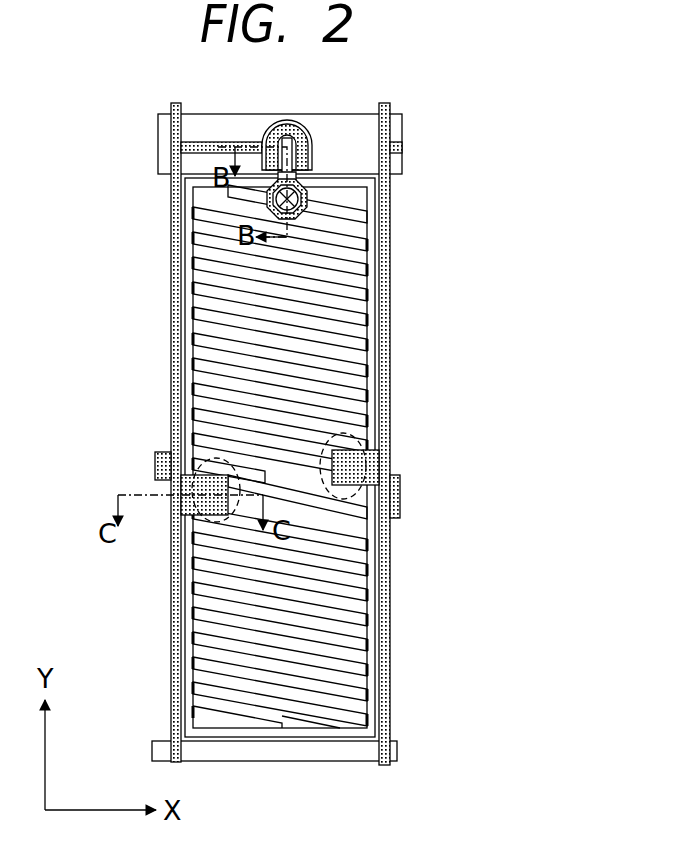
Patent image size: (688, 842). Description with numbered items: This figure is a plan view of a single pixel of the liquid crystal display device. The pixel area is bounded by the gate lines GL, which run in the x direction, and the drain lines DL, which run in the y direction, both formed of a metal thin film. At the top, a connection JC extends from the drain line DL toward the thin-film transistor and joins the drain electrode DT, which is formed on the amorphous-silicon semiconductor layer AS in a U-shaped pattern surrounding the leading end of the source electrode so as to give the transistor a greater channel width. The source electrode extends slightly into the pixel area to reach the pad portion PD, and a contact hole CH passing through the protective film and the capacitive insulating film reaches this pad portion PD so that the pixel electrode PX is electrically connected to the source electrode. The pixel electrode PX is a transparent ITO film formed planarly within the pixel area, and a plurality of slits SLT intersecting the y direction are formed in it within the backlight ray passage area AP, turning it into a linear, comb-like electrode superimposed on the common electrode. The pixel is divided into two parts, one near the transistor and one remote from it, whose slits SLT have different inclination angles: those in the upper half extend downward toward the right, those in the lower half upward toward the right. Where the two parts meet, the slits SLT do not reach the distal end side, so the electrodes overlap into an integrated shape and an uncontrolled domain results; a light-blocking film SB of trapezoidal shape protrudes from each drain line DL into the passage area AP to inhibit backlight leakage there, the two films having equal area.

The gate line GL is at (158, 137).
The drain line DL is at (171, 383).
The connection JC is at (202, 142).
The semiconductor layer AS is at (285, 121).
The drain electrode DT is at (306, 124).
The pad portion PD is at (307, 196).
The contact hole CH is at (300, 211).
The slit SLT is at (193, 260).
The pixel electrode PX is at (193, 323).
The light-blocking film SB is at (181, 478).
The passage area AP is at (257, 737).